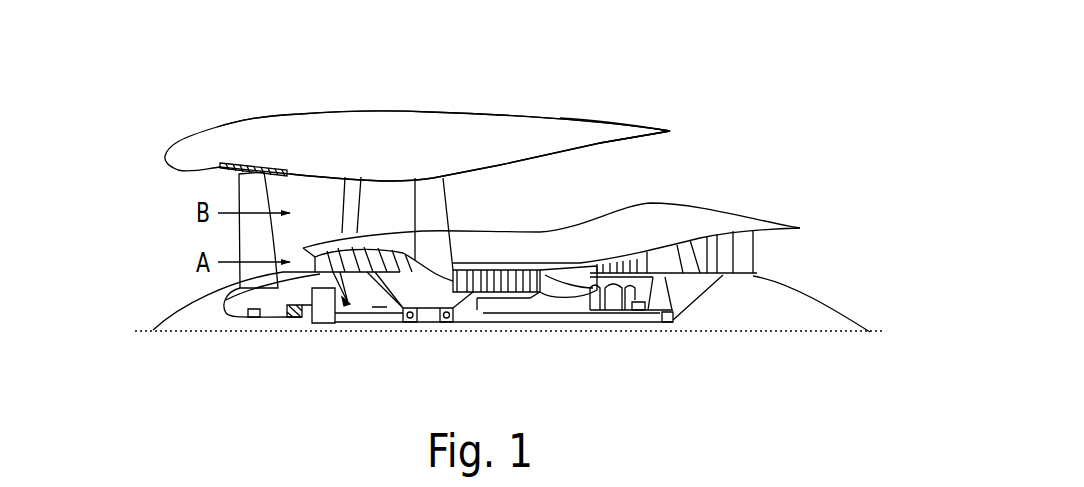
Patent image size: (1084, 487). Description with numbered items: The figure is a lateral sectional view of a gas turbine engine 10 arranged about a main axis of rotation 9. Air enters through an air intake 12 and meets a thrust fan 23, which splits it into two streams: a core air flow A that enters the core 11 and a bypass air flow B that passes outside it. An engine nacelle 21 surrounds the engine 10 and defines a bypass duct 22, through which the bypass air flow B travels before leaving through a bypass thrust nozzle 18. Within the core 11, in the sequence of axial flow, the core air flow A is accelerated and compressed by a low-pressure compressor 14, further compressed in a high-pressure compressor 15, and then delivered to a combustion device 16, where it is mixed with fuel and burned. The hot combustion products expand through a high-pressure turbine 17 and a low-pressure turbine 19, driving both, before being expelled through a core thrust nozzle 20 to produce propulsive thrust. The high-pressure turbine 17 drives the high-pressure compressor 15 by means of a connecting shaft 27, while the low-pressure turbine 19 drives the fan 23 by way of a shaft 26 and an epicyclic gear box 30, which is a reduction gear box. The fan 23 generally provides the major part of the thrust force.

The main axis of rotation 9 is at (775, 335).
The gas turbine engine 10 is at (214, 126).
The core 11 is at (574, 252).
The air intake 12 is at (177, 189).
The low-pressure compressor 14 is at (378, 262).
The high-pressure compressor 15 is at (500, 282).
The combustion device 16 is at (560, 282).
The high-pressure turbine 17 is at (613, 265).
The bypass thrust nozzle 18 is at (759, 127).
The low-pressure turbine 19 is at (730, 262).
The core thrust nozzle 20 is at (806, 262).
The engine nacelle 21 is at (430, 118).
The bypass duct 22 is at (650, 167).
The thrust fan 23 is at (247, 247).
The shaft 26 is at (472, 323).
The connecting shaft 27 is at (527, 300).
The epicyclic gear box 30 is at (323, 323).